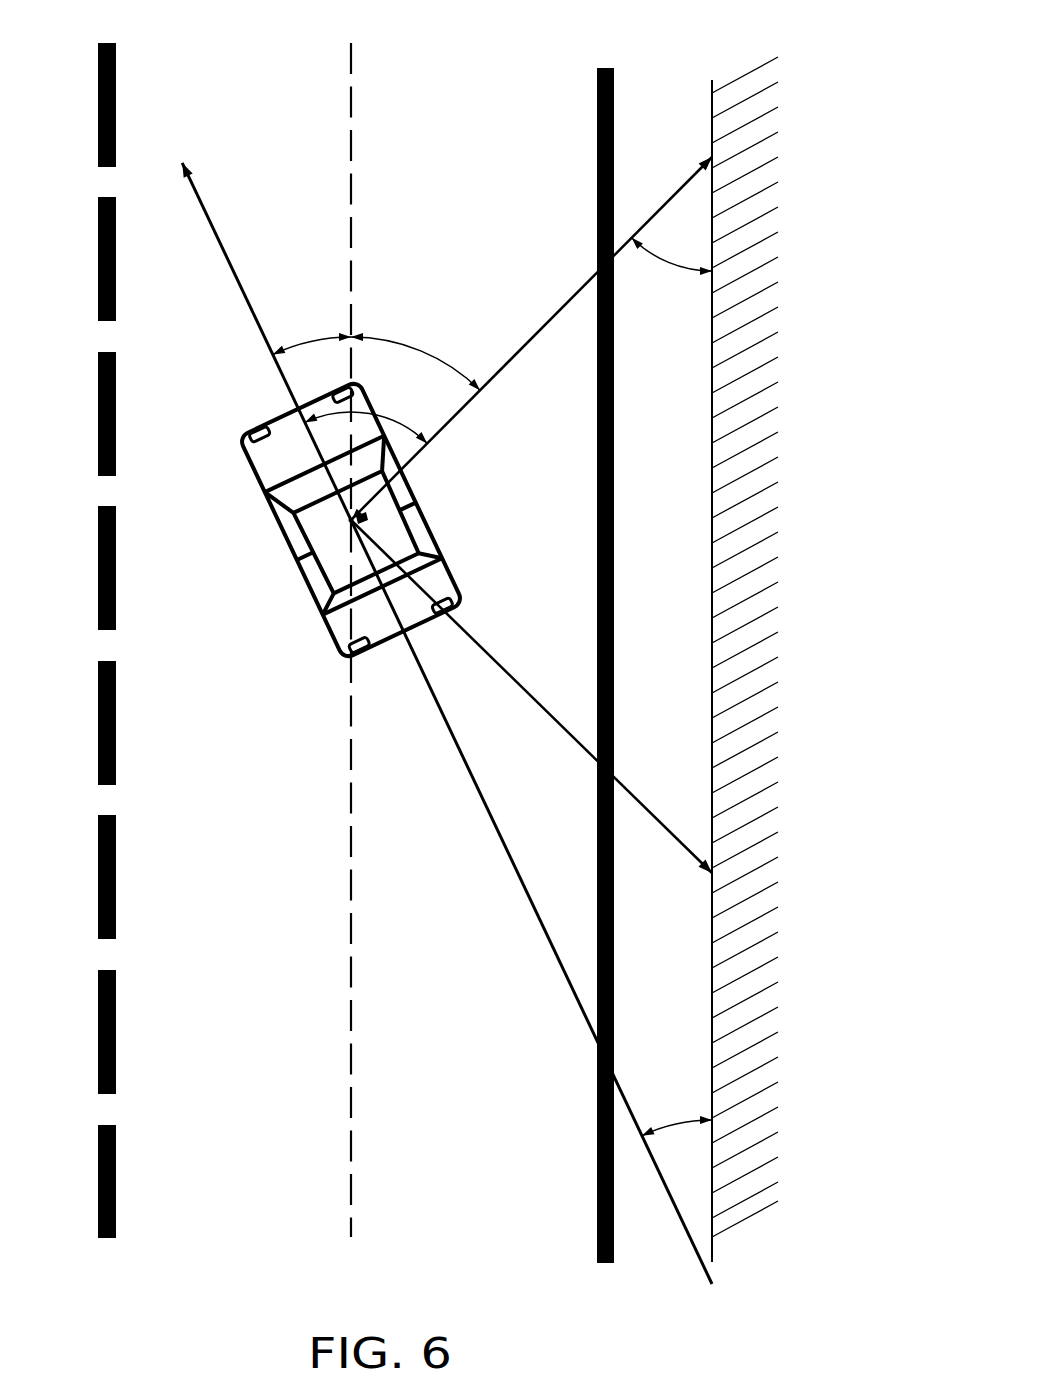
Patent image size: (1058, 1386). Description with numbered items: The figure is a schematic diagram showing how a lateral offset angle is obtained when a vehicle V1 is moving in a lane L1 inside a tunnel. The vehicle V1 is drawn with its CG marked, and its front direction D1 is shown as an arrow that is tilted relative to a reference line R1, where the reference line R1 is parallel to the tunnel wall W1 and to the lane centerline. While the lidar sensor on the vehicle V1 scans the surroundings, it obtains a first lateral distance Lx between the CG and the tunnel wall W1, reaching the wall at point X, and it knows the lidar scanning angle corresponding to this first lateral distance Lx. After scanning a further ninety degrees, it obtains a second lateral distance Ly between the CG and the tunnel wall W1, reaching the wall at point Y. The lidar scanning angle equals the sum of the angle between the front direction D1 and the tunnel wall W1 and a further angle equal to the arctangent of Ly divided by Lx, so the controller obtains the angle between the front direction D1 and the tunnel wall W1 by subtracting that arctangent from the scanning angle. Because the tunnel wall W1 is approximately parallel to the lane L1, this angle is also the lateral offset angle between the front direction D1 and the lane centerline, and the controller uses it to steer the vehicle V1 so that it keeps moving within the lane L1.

The lane L1 is at (302, 102).
The reference line R1 is at (352, 98).
The front direction D1 is at (207, 217).
The vehicle V1 is at (252, 478).
The element CG is at (347, 523).
The tunnel wall W1 is at (712, 125).
The point X on wall X is at (715, 155).
The point Y on wall Y is at (715, 874).
The first lateral distance Lx is at (531, 338).
The second lateral distance Ly is at (531, 696).